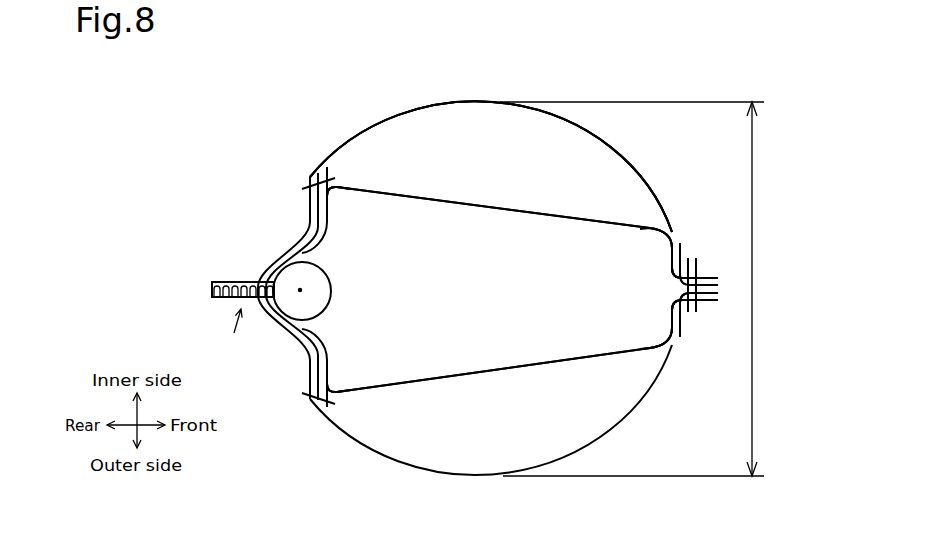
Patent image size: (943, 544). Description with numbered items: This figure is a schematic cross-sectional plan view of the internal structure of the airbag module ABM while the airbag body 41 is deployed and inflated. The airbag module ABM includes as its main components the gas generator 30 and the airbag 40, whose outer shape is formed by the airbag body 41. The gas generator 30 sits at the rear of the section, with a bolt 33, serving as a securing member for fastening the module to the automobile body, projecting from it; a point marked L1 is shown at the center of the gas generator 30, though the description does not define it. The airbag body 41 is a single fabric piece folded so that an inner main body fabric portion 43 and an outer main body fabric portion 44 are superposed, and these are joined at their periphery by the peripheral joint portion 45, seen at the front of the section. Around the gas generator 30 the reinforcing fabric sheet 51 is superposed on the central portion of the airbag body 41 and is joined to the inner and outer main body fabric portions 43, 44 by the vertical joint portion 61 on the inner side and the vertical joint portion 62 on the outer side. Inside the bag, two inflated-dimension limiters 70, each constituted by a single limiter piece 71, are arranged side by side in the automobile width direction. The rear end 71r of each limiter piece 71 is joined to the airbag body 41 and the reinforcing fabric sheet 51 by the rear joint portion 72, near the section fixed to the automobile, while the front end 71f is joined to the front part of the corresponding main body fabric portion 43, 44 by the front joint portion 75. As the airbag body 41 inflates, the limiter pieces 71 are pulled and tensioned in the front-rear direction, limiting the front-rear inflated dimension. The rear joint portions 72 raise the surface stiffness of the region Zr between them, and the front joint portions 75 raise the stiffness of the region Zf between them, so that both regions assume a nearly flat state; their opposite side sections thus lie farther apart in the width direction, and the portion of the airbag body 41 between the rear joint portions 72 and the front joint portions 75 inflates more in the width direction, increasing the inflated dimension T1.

The main body fabric portion 43 is at (372, 125).
The airbag body 41 is at (491, 151).
The airbag 40 is at (491, 151).
The main body fabric portion 44 is at (382, 457).
The reinforcing fabric sheet 51 is at (311, 208).
The vertical joint portion 61 is at (312, 170).
The vertical joint portion 62 is at (312, 403).
The inflated-dimension limiter 70 is at (522, 290).
The limiter piece 71 is at (489, 207).
The rear end 71r is at (329, 230).
The front end 71f is at (669, 262).
The rear joint portion 72 is at (334, 190).
The front joint portion 75 is at (688, 241).
The peripheral joint portion 45 is at (697, 258).
The region Zf is at (681, 322).
The region Zr is at (309, 367).
The gas generator 30 is at (283, 255).
The optical axis L1 is at (304, 290).
The bolt 33 is at (232, 281).
The airbag module ABM is at (228, 337).
The inflated dimension T1 is at (755, 290).